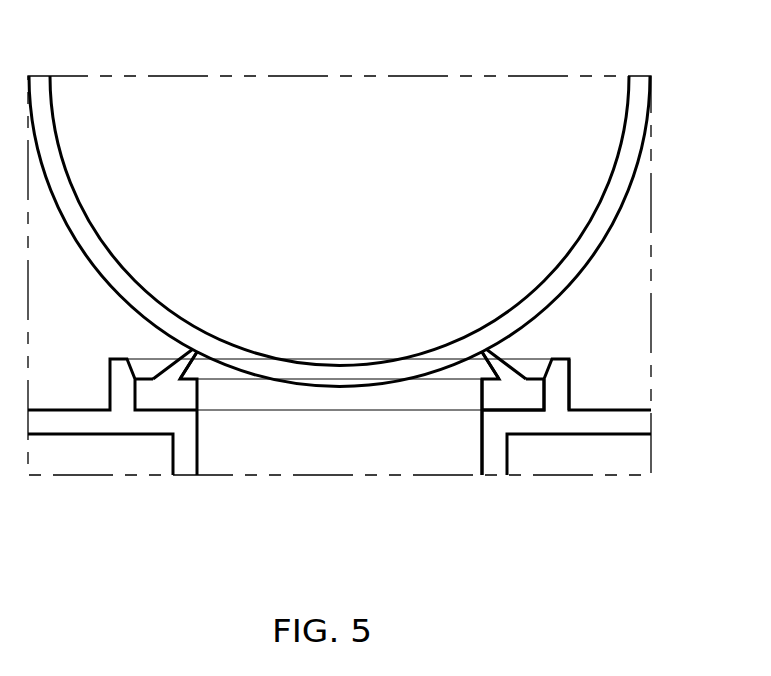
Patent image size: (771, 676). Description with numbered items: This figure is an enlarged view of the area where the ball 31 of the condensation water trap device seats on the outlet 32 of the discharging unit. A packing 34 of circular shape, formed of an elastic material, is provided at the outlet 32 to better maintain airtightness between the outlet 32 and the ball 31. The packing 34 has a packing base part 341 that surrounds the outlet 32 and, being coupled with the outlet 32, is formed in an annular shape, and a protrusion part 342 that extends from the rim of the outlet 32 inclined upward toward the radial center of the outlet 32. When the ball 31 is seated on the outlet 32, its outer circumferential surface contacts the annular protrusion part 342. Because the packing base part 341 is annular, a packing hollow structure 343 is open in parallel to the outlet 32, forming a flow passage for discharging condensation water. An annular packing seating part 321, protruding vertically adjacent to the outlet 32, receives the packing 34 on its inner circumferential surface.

The ball 31 is at (526, 95).
The outlet 32 is at (373, 303).
The packing seating part 321 is at (569, 378).
The packing 34 is at (339, 379).
The packing base part 341 is at (527, 398).
The protrusion part 342 is at (515, 367).
The packing hollow structure 343 is at (277, 399).